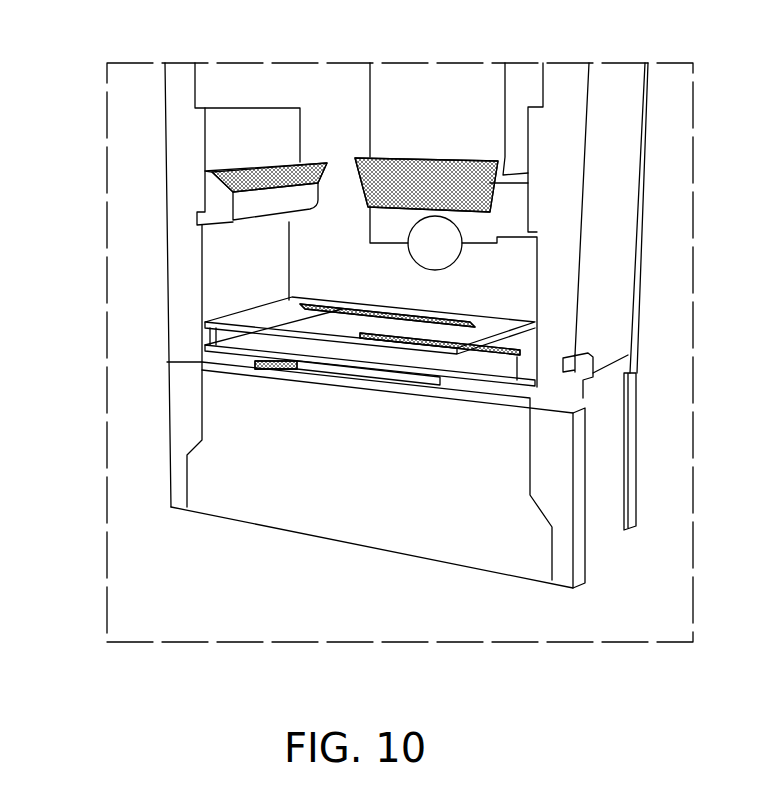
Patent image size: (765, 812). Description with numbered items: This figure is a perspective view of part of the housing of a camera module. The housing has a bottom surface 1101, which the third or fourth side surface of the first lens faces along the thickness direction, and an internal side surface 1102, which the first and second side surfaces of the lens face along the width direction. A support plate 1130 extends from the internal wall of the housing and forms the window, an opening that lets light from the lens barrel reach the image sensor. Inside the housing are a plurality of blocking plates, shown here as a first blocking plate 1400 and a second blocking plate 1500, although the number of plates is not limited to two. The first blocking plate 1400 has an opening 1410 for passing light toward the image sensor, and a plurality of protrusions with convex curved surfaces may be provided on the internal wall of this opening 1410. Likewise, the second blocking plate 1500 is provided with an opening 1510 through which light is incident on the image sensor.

The bottom surface 1101 is at (337, 97).
The internal side surface 1102 is at (232, 247).
The second blocking plate 1500 is at (258, 315).
The opening 1510 is at (340, 300).
The support plate 1130 is at (213, 360).
The blocking plate 1400 is at (249, 343).
The opening 1410 is at (301, 352).